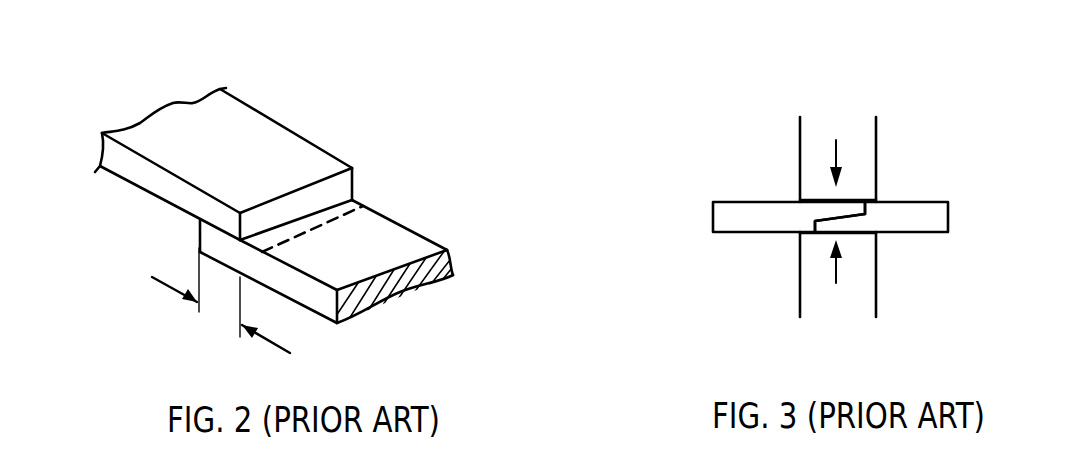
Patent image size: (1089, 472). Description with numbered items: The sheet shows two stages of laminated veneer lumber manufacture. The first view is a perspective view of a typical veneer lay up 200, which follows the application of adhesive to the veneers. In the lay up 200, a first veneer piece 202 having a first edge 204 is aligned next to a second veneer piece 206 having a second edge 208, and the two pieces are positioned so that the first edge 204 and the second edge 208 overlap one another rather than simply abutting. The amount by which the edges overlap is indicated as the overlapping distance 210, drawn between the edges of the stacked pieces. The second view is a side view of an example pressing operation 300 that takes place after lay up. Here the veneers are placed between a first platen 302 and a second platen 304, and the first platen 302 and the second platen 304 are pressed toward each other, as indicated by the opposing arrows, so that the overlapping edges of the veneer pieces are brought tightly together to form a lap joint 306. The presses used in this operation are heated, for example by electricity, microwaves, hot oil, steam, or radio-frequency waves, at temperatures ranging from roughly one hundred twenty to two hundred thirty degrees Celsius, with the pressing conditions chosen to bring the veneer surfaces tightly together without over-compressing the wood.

In FIG. 2, the veneer lay up 200 is at (160, 77).
In FIG. 2, the first veneer piece 202 is at (275, 143).
In FIG. 3, the first veneer piece 202 is at (758, 212).
In FIG. 2, the first edge 204 is at (340, 187).
In FIG. 2, the second veneer piece 206 is at (392, 245).
In FIG. 3, the second veneer piece 206 is at (920, 202).
In FIG. 2, the second edge 208 is at (195, 233).
In FIG. 2, the overlapping distance 210 is at (222, 313).
In FIG. 3, the pressing operation 300 is at (708, 103).
In FIG. 3, the first platen 302 is at (876, 147).
In FIG. 3, the second platen 304 is at (876, 283).
In FIG. 3, the lap joint 306 is at (815, 214).